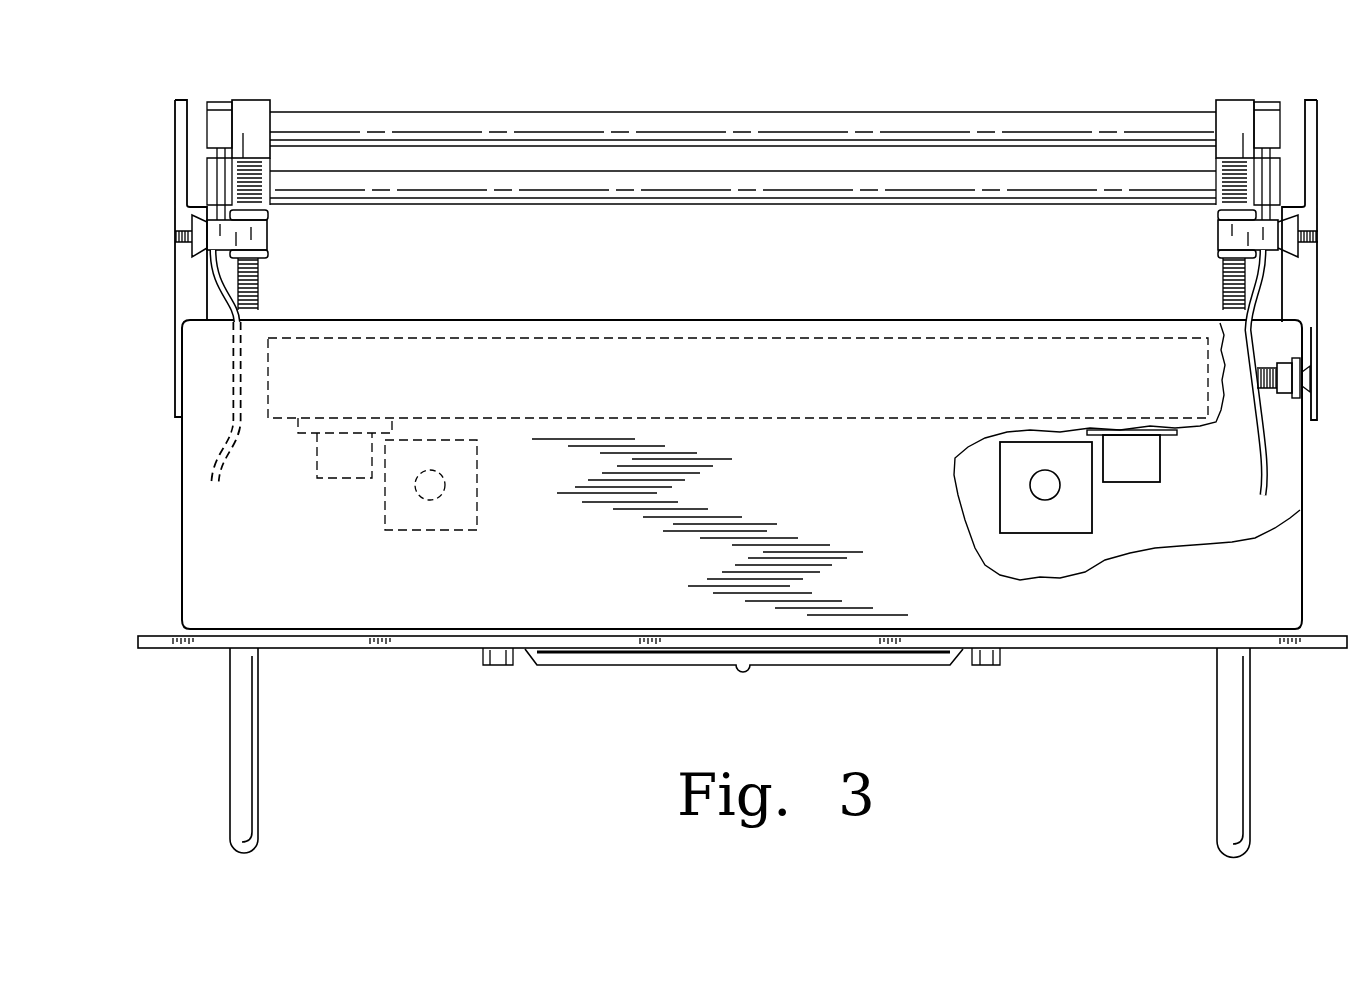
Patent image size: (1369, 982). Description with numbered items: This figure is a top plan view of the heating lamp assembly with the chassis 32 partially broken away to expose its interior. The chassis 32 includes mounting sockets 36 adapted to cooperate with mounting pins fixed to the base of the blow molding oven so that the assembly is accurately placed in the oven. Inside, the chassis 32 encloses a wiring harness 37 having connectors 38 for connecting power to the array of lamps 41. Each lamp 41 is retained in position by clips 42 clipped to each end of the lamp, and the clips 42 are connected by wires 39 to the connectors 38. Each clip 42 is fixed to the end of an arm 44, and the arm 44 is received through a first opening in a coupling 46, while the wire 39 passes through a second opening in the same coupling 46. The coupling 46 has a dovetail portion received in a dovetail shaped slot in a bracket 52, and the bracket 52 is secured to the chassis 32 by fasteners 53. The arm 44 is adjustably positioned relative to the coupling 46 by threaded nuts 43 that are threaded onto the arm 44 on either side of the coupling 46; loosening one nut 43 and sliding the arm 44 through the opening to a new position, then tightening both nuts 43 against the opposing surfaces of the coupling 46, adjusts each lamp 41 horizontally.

The chassis 32 is at (205, 566).
The mounting socket 36 is at (1018, 470).
The wiring harness 37 is at (1180, 434).
The connector 38 is at (1140, 462).
The wire 39 is at (1198, 497).
The lamp 41 is at (536, 125).
The clip 42 is at (249, 110).
The threaded nut 43 is at (270, 213).
The arm 44 is at (258, 288).
The coupling 46 is at (270, 232).
The bracket 52 is at (186, 289).
The fastener 53 is at (1312, 379).